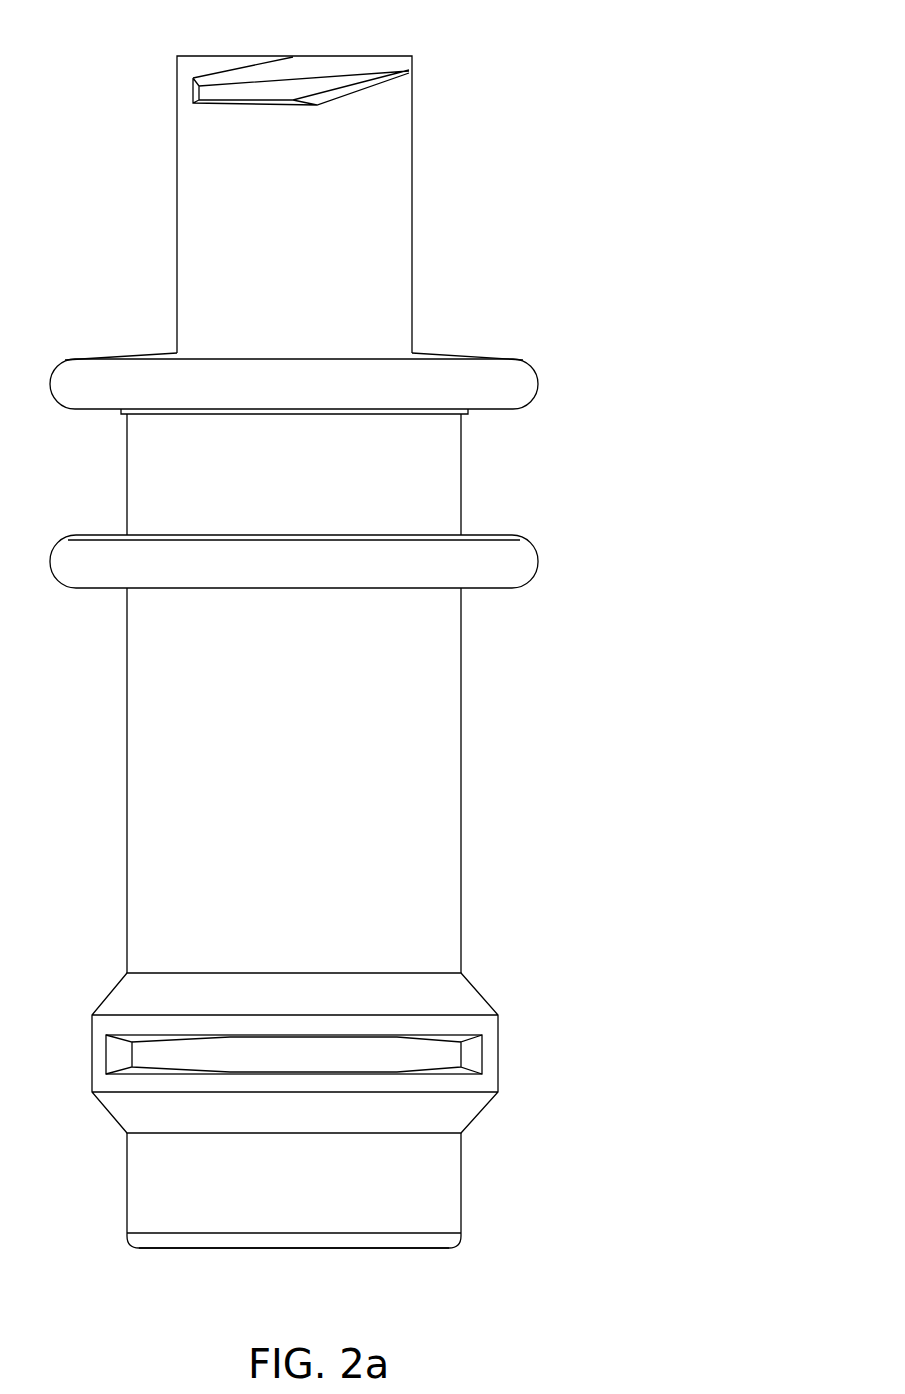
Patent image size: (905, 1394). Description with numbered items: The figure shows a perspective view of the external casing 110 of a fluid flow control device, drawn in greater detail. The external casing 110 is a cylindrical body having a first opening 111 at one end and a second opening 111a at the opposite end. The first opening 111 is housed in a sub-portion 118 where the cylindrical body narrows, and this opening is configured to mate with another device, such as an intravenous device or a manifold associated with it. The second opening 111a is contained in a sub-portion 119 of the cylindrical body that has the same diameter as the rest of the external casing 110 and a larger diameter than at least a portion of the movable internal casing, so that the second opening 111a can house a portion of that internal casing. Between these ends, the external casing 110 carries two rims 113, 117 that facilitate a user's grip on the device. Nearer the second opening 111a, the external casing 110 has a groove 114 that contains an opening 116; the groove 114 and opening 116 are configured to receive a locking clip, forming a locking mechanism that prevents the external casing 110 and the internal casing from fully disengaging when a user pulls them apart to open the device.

The external casing 110 is at (462, 662).
The first opening 111 is at (372, 53).
The second opening 111a is at (168, 1250).
The rim 113 is at (540, 550).
The groove 114 is at (118, 1012).
The opening 116 is at (452, 1053).
The rim 117 is at (540, 385).
The sub-portion 118 is at (412, 205).
The sub-portion 119 is at (462, 1182).